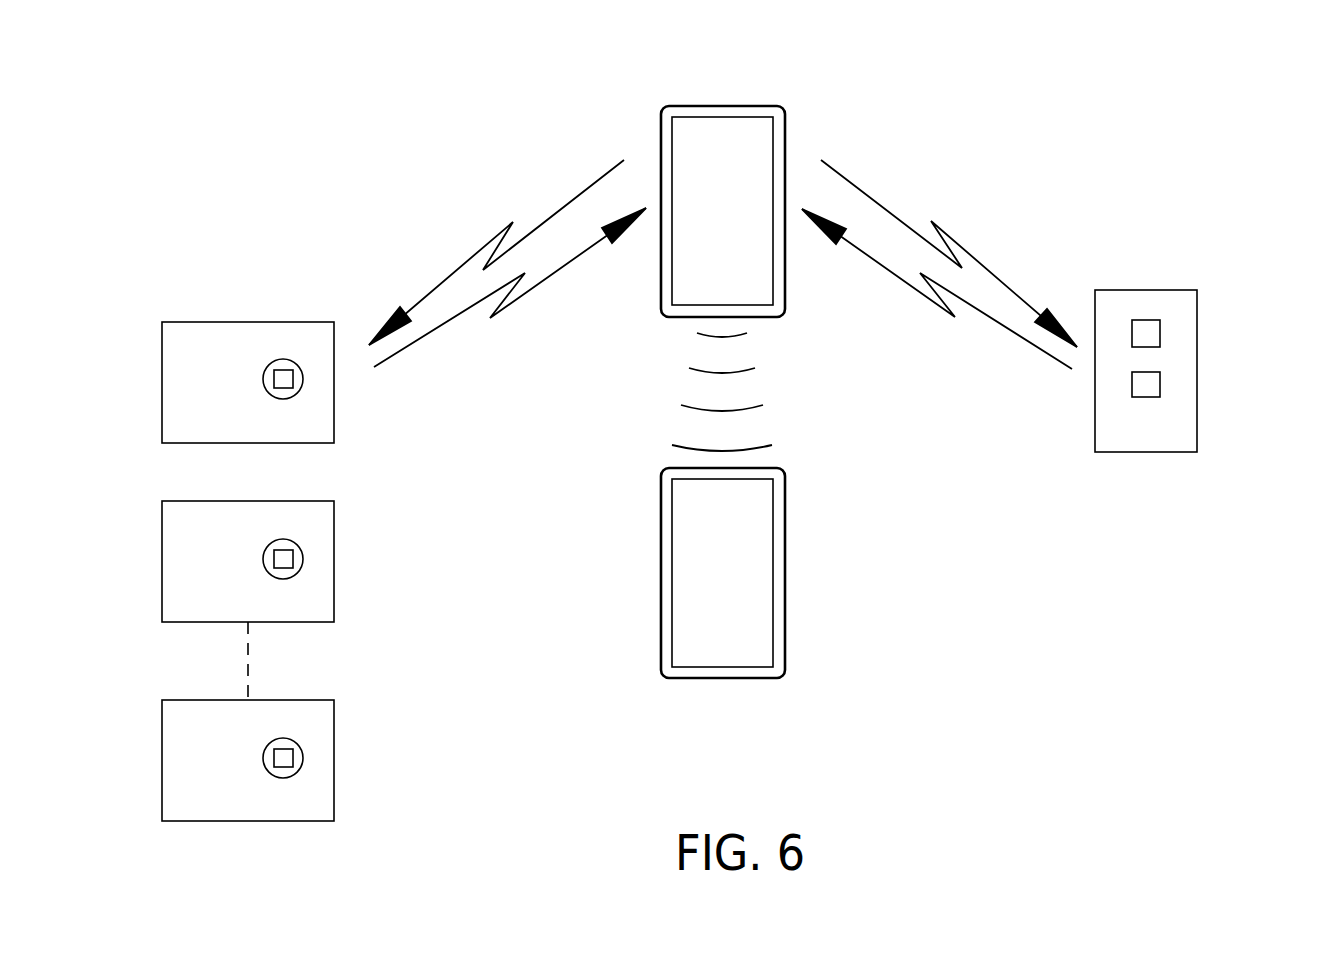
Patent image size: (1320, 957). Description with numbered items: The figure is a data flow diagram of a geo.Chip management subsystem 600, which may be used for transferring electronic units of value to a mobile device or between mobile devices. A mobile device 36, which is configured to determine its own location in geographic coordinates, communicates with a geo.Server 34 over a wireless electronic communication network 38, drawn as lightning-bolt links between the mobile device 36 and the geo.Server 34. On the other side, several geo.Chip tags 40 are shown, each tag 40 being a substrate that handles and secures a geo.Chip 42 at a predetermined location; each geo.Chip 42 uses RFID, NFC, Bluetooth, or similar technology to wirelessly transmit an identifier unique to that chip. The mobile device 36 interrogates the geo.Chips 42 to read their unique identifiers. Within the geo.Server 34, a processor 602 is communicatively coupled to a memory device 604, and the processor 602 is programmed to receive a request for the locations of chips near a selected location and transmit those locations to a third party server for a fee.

The geo.Chip management subsystem 600 is at (268, 120).
The mobile device 36 is at (782, 108).
The electronic communication network 38 is at (950, 215).
The geo.Chip tag 40 is at (198, 321).
The geo.Chip 42 is at (285, 383).
The geo.Server 34 is at (1148, 290).
The processor 602 is at (1148, 333).
The memory device 604 is at (1148, 383).